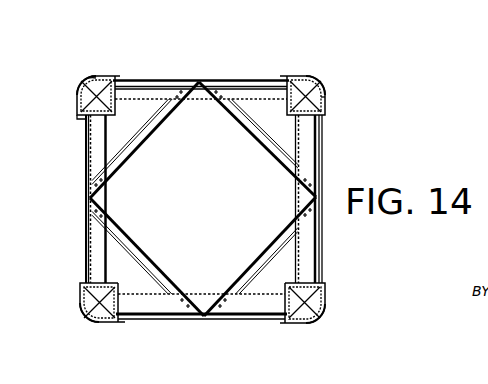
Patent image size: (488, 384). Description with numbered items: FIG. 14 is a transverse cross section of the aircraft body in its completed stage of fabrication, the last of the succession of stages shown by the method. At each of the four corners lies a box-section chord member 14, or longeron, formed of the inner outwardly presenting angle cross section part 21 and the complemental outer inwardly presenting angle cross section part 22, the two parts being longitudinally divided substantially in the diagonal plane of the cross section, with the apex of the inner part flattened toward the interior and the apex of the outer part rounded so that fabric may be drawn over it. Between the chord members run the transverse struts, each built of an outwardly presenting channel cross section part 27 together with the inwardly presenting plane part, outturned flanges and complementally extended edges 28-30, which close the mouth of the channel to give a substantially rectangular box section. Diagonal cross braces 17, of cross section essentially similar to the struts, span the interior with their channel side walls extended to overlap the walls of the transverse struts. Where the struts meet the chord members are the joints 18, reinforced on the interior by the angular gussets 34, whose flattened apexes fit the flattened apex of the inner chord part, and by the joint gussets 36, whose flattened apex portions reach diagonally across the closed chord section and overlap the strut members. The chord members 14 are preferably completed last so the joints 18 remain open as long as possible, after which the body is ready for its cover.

The chord member 14 is at (90, 90).
The diagonal cross brace 17 is at (168, 117).
The joint 18 is at (88, 77).
The inner angle cross section part 21 is at (321, 97).
The outer angle cross section part 22 is at (107, 77).
The channel cross section part 27 is at (106, 198).
The inwardly presenting part, outturned flanges and extended edges 28-30 is at (86, 204).
The reinforcing gusset 34 is at (123, 100).
The reinforcing gusset 36 is at (82, 124).